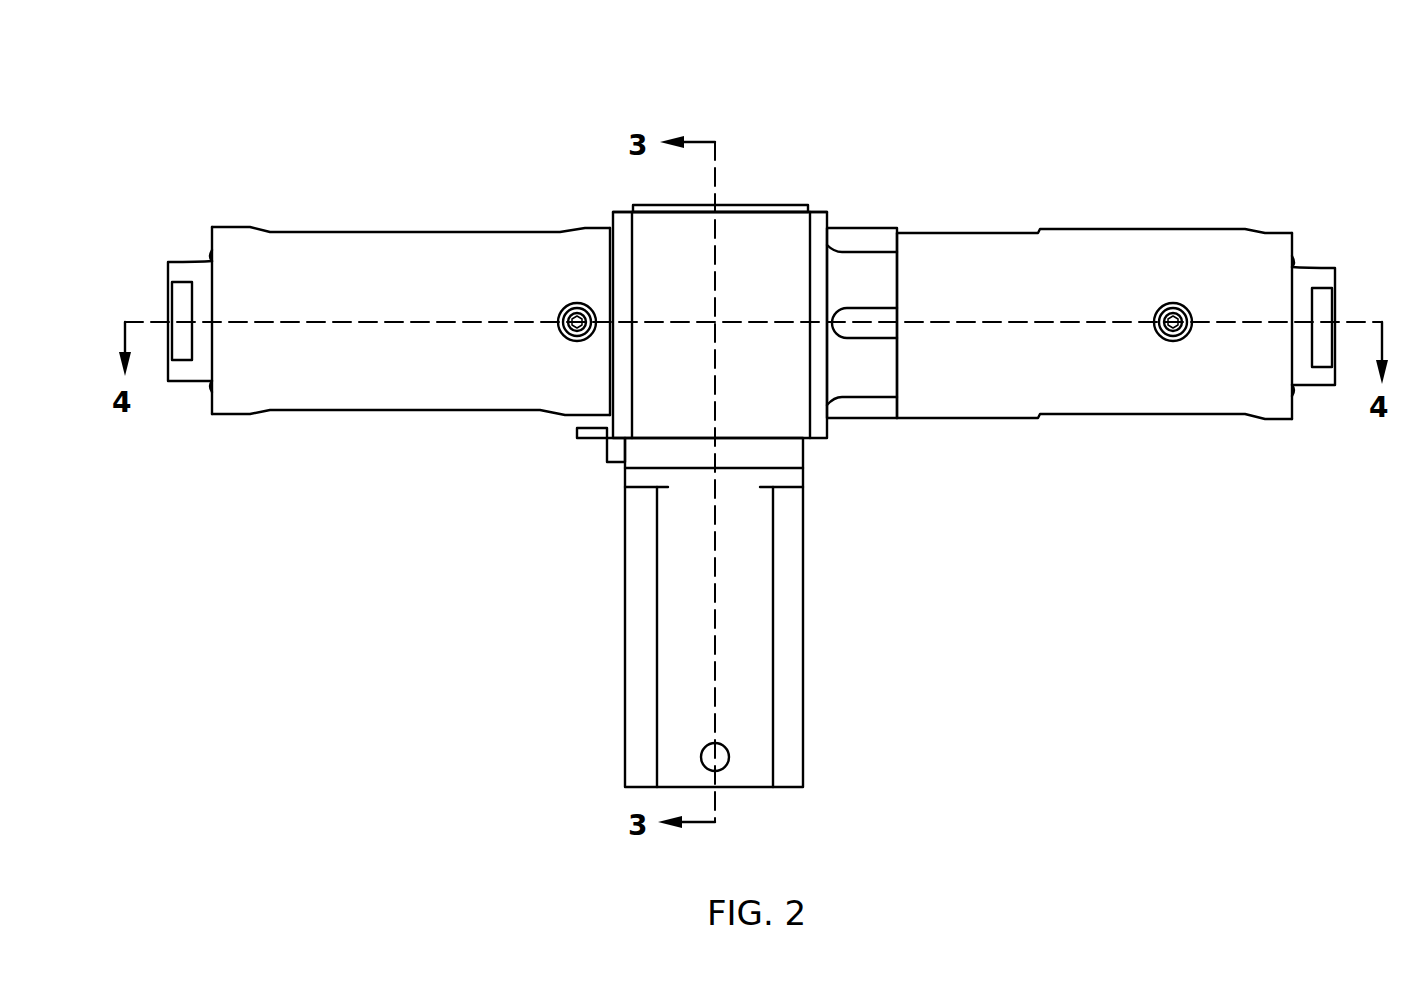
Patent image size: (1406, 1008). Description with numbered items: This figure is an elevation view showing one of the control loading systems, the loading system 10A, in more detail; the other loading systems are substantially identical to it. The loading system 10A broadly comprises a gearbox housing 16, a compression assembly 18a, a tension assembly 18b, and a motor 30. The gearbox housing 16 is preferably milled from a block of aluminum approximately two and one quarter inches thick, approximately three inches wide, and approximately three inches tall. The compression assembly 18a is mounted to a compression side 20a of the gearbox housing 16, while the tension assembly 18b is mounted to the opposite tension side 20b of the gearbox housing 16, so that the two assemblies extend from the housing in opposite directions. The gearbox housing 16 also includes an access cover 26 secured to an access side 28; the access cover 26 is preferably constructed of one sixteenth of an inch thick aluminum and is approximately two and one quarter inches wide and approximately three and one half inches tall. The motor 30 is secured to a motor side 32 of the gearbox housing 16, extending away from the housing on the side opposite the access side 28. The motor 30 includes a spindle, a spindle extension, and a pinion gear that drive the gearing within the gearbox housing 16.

The loading system 10A is at (1152, 106).
The gearbox housing 16 is at (657, 395).
The compression assembly 18a is at (1121, 455).
The tension assembly 18b is at (392, 446).
The compression side 20a is at (810, 397).
The tension side 20b is at (632, 245).
The access cover 26 is at (773, 212).
The access side 28 is at (662, 211).
The motor 30 is at (678, 650).
The motor side 32 is at (675, 438).